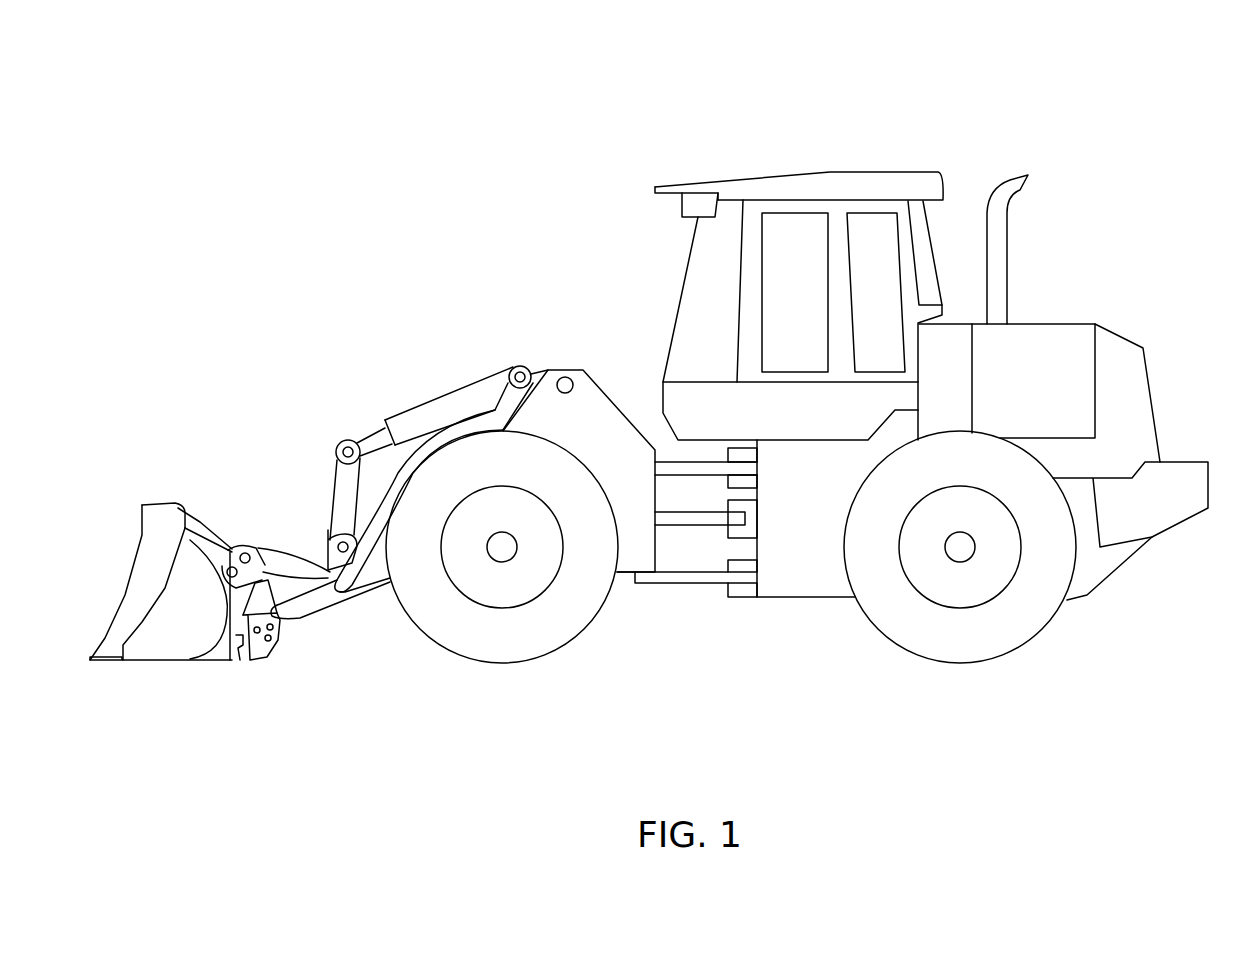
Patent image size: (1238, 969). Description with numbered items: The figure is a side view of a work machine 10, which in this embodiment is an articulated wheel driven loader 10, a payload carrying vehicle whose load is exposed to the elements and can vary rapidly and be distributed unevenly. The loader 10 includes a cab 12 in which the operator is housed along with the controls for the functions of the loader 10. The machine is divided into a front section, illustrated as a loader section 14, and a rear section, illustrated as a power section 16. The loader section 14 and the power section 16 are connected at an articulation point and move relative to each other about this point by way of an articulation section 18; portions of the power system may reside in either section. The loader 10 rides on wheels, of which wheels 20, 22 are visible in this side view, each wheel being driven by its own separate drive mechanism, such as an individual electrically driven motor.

The work machine 10 is at (977, 85).
The cab 12 is at (618, 169).
The loader section 14 is at (343, 314).
The power section 16 is at (1099, 213).
The articulation section 18 is at (712, 633).
The wheel 20 is at (930, 633).
The wheel 22 is at (470, 633).